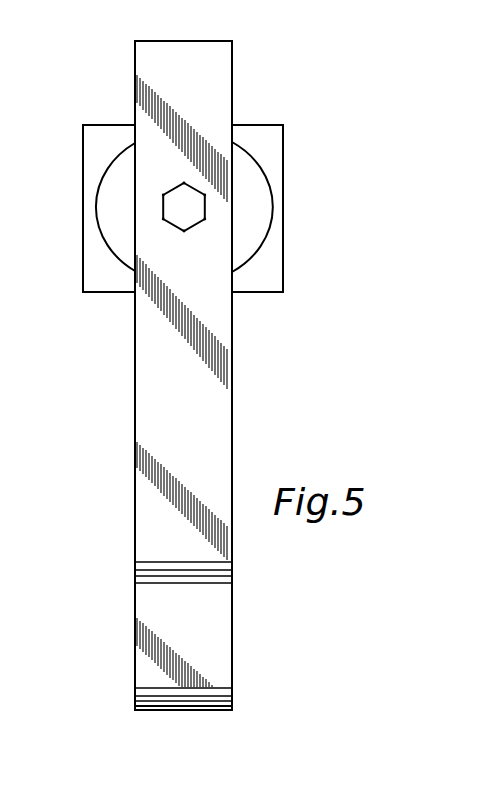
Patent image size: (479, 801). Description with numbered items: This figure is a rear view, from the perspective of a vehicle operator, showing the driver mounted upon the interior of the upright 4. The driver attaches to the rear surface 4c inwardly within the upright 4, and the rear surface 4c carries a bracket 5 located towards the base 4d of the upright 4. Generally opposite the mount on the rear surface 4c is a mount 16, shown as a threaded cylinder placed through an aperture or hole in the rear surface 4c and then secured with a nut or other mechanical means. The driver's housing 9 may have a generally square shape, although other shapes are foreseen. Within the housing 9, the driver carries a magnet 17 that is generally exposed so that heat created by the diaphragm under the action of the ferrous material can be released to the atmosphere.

The upright 4 is at (248, 51).
The rear surface 4c is at (196, 424).
The base 4d is at (160, 711).
The bracket 5 is at (226, 576).
The housing 9 is at (283, 131).
The mount 16 is at (170, 208).
The magnet 17 is at (246, 222).